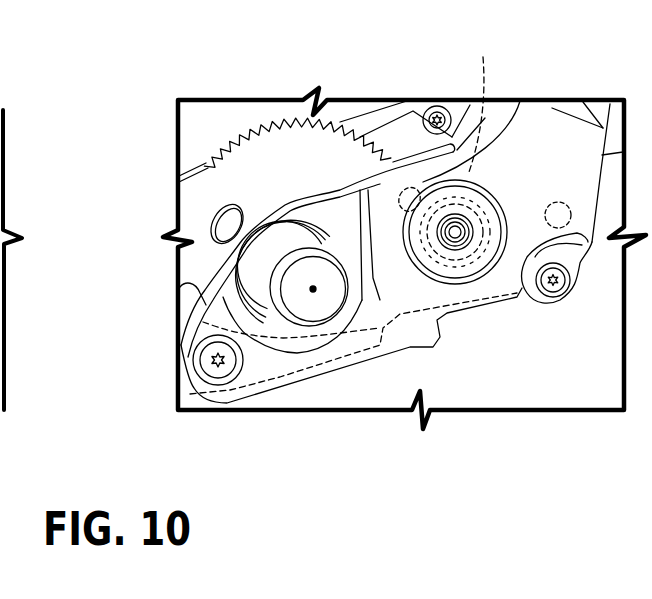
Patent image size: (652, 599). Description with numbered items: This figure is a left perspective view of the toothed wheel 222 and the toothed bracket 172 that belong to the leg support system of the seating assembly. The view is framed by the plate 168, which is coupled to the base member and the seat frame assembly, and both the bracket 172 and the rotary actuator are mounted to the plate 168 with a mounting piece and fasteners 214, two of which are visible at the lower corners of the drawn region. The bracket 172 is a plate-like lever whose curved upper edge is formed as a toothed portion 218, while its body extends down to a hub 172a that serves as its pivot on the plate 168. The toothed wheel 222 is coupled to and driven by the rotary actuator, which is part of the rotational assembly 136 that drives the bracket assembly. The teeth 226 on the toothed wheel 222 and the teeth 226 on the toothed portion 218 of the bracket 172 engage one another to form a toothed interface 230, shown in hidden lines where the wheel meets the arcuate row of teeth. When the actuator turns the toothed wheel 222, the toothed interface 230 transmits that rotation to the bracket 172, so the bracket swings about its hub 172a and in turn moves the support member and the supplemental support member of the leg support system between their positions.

The rotational assembly 136 is at (445, 292).
The plate 168 is at (554, 156).
The bracket 172 is at (291, 178).
The pivot boss of lever 172a is at (313, 289).
The fasteners 214 is at (226, 368).
The toothed portion 218 is at (240, 137).
The toothed wheel 222 is at (467, 218).
The teeth 226 is at (347, 137).
The toothed interface 230 is at (413, 182).